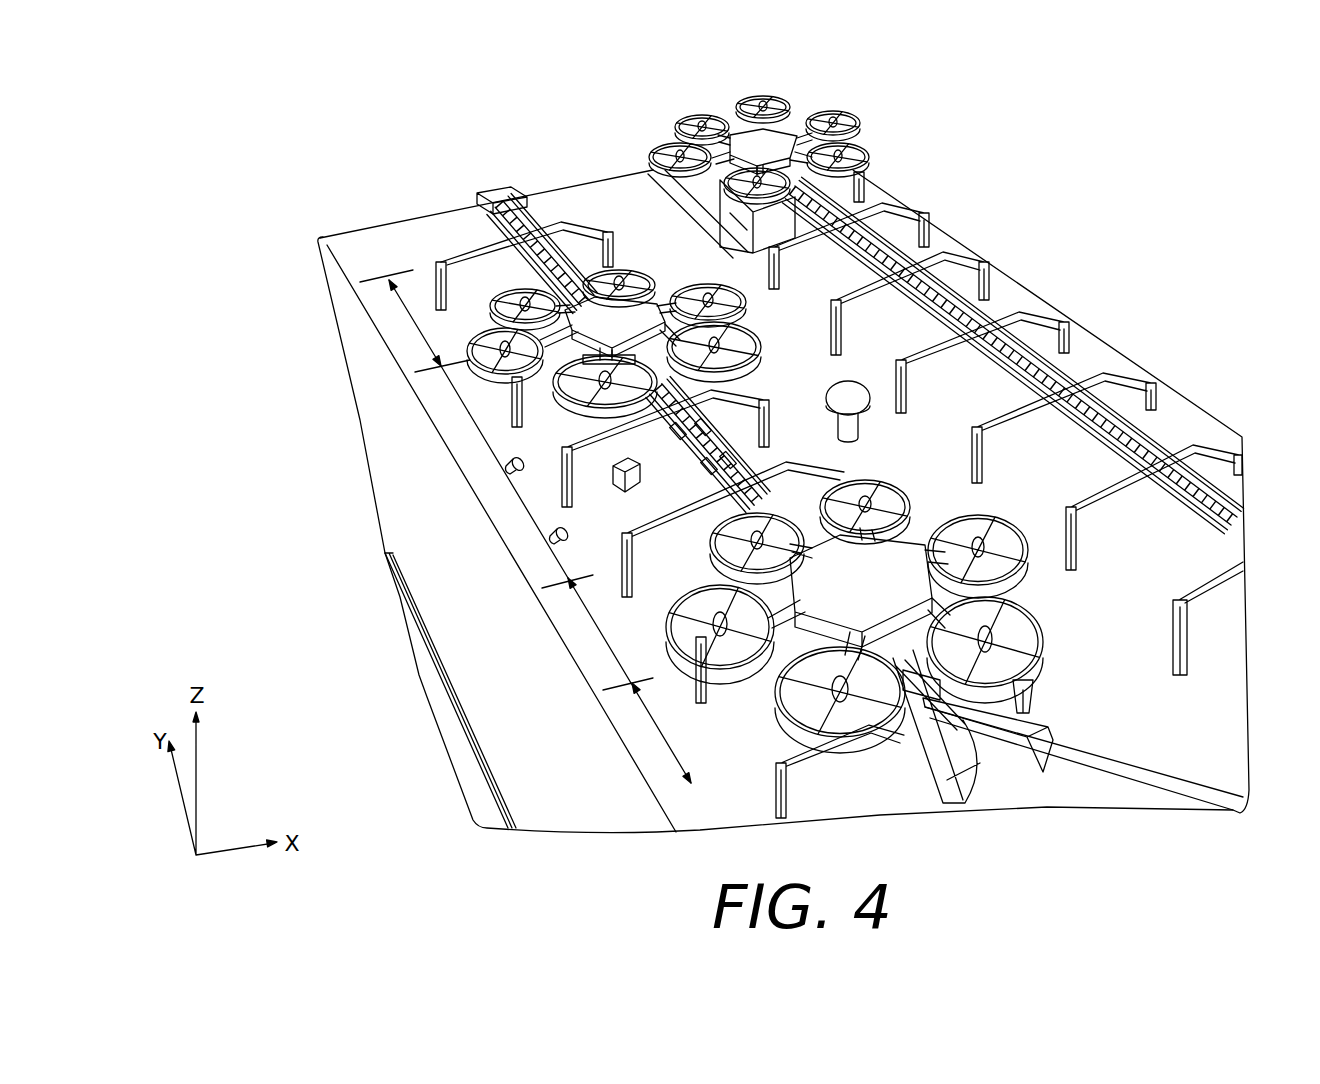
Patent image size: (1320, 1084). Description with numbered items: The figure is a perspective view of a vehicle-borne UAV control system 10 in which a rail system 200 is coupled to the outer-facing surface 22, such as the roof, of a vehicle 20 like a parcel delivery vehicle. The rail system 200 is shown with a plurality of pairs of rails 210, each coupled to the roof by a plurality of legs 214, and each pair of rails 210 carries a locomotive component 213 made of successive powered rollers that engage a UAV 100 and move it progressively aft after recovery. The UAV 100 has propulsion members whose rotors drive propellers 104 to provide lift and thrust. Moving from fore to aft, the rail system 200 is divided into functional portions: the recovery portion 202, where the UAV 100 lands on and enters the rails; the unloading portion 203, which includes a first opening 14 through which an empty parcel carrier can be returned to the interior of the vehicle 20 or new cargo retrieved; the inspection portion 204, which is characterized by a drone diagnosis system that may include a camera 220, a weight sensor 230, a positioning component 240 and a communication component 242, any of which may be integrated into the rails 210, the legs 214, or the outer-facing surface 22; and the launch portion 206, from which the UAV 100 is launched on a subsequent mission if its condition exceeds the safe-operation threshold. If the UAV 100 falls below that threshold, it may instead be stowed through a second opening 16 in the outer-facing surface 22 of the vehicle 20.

The UAV control system 10 is at (1222, 295).
The first opening 14 is at (750, 690).
The second opening 16 is at (472, 222).
The vehicle 20 is at (439, 538).
The outer-facing surface 22 is at (350, 250).
The UAV 100 is at (636, 316).
The propellers 104 is at (715, 345).
The rail system 200 is at (727, 103).
The recovery portion 202 is at (663, 733).
The unloading portion 203 is at (596, 639).
The inspection portion 204 is at (469, 413).
The launch portion 206 is at (413, 320).
The pair of rails 210 is at (520, 217).
The locomotive component 213 is at (498, 193).
The legs 214 is at (440, 257).
The camera 220 is at (550, 540).
The weight sensor 230 is at (737, 463).
The positioning component 240 is at (862, 382).
The communication component 242 is at (623, 490).